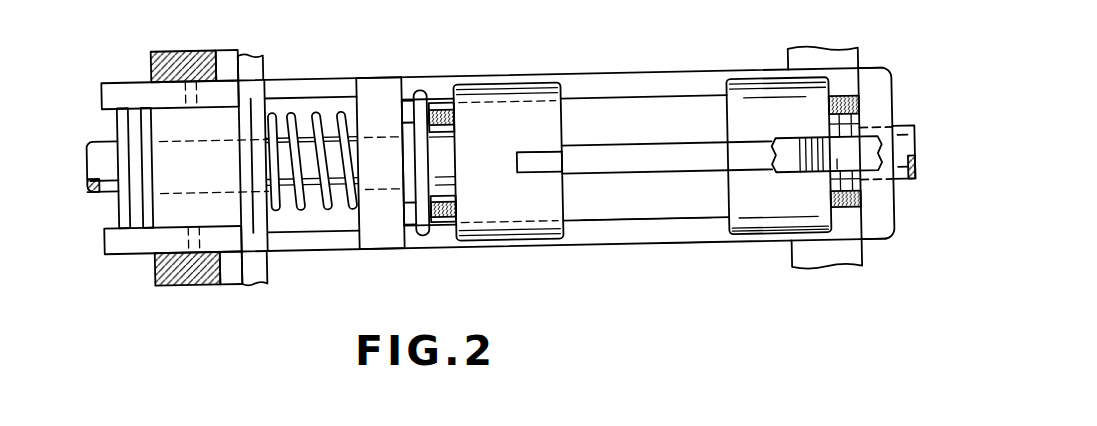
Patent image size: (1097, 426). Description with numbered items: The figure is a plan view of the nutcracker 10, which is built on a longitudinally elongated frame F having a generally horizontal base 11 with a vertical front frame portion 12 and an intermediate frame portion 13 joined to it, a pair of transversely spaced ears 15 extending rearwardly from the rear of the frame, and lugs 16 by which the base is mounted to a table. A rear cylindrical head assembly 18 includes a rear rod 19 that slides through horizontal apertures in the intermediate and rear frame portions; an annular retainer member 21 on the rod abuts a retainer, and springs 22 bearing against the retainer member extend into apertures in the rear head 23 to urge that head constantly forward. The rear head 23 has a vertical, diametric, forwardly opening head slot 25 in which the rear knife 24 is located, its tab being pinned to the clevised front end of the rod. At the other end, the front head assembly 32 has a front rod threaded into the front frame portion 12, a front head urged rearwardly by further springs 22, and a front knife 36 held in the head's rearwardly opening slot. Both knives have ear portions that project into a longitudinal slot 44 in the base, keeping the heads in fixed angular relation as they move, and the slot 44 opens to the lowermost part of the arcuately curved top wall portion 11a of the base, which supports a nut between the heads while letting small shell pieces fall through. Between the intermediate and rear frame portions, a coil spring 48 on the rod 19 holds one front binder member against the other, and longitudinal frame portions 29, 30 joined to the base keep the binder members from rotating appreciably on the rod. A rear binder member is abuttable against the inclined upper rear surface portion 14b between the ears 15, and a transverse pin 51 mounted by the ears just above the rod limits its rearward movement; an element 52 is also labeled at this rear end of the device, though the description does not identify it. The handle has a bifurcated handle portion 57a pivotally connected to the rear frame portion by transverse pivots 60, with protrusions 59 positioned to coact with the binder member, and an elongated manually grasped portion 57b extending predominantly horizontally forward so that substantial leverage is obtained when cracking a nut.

The nutcracker 10 is at (700, 63).
The base 11 is at (622, 75).
The arcuately curved top wall portion 11a is at (612, 203).
The front frame portion 12 is at (872, 88).
The intermediate frame portion 13 is at (375, 103).
The upper rear surface portion 14b is at (140, 147).
The ears 15 is at (200, 283).
The lugs 16 is at (255, 63).
The rear cylindrical head assembly 18 is at (532, 225).
The rear rod 19 is at (100, 167).
The annular retainer member 21 is at (418, 93).
The springs 22 is at (443, 123).
The rear head 23 is at (523, 102).
The rear knife 24 is at (517, 158).
The head slot 25 is at (540, 150).
The longitudinal frame portion 29 is at (293, 240).
The longitudinal frame portion 30 is at (308, 90).
The front head assembly 32 is at (758, 230).
The front knife 36 is at (753, 157).
The longitudinal slot 44 is at (660, 142).
The coil spring 48 is at (330, 207).
The transverse pin 51 is at (122, 203).
The plate 52 is at (150, 117).
The bifurcated handle portion 57a is at (152, 63).
The manually grasped portion 57b is at (817, 173).
The protrusions 59 is at (228, 50).
The transverse pivots 60 is at (155, 277).
The frame F is at (673, 230).